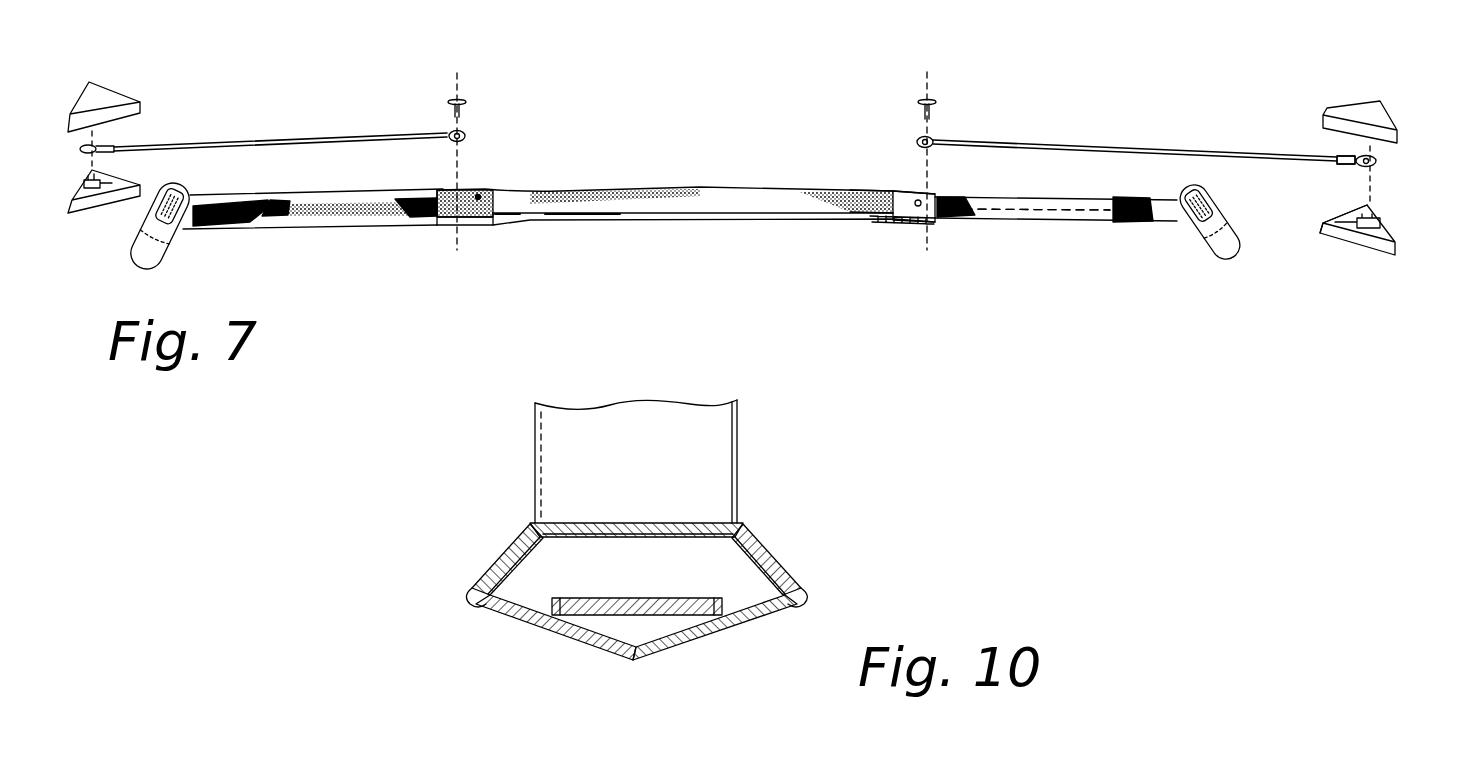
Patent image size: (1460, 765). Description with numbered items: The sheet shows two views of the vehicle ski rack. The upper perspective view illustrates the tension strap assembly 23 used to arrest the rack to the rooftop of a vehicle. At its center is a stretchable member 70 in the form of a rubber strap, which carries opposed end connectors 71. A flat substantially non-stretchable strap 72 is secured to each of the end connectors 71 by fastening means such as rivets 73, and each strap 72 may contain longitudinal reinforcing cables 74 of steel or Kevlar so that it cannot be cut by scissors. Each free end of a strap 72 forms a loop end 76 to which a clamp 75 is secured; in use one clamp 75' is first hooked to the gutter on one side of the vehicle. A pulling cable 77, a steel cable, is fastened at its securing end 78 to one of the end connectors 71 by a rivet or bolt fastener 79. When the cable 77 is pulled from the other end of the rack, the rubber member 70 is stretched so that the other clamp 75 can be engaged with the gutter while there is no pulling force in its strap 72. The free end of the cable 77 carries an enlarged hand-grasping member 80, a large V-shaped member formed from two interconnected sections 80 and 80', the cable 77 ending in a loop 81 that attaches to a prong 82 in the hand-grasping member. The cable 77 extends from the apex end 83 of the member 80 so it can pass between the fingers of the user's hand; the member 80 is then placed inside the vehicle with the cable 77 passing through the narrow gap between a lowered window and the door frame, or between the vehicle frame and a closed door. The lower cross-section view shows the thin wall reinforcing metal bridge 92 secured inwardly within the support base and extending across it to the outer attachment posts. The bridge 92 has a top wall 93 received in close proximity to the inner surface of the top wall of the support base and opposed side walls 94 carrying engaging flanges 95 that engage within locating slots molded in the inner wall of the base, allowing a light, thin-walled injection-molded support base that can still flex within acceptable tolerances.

In FIG. 7, the tension strap assembly 23 is at (612, 172).
In FIG. 7, the stretchable member 70 is at (685, 195).
In FIG. 7, the end connectors 71 is at (492, 207).
In FIG. 7, the flat substantially non-stretchable strap 72 is at (315, 210).
In FIG. 7, the rivets 73 is at (897, 217).
In FIG. 7, the reinforcing cables 74 is at (987, 205).
In FIG. 7, the clamp 75 is at (1216, 244).
In FIG. 7, the clamp 75' is at (184, 217).
In FIG. 7, the loop end 76 is at (1137, 200).
In FIG. 7, the pulling cable 77 is at (1187, 152).
In FIG. 7, the securing end 78 is at (933, 138).
In FIG. 7, the rivet or bolt fastener 79 is at (935, 99).
In FIG. 7, the hand-grasping member 80 is at (732, 105).
In FIG. 7, the hand-grasping member section 80' is at (744, 237).
In FIG. 7, the loop 81 is at (1380, 163).
In FIG. 7, the prong 82 is at (1377, 219).
In FIG. 7, the apex end 83 is at (1323, 225).
In FIG. 10, the reinforcing metal bridge 92 is at (587, 540).
In FIG. 10, the top wall 93 is at (663, 523).
In FIG. 10, the side walls 94 is at (520, 570).
In FIG. 10, the engaging flanges 95 is at (490, 607).